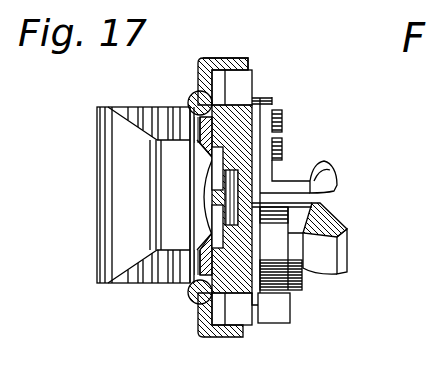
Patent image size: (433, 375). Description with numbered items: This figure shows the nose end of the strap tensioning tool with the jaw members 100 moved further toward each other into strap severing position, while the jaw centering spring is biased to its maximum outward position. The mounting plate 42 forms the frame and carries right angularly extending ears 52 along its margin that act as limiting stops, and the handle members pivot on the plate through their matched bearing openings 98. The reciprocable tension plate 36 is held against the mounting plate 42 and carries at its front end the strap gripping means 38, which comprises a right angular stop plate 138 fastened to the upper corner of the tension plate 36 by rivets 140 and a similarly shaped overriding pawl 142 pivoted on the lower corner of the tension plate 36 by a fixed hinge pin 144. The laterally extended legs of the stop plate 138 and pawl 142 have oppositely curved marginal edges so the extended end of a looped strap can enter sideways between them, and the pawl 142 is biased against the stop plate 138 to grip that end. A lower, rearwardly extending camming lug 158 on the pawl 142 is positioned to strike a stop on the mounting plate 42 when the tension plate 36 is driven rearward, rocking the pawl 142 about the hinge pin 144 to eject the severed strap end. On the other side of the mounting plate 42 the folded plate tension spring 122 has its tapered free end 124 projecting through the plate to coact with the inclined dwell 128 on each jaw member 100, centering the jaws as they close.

The tension plate 36 is at (259, 103).
The strap gripping means 38 is at (373, 205).
The mounting plate 42 is at (200, 64).
The ears 52 is at (247, 58).
The O-ring seal 98 is at (194, 90).
The jaw members 100 is at (243, 118).
The folded plate tension spring 122 is at (115, 195).
The tapered free end 124 is at (204, 152).
The inclined dwell 128 is at (213, 202).
The stop plate 138 is at (330, 165).
The rivets 140 is at (281, 150).
The overriding pawl 142 is at (347, 251).
The hinge pin 144 is at (302, 286).
The camming lug 158 is at (280, 312).